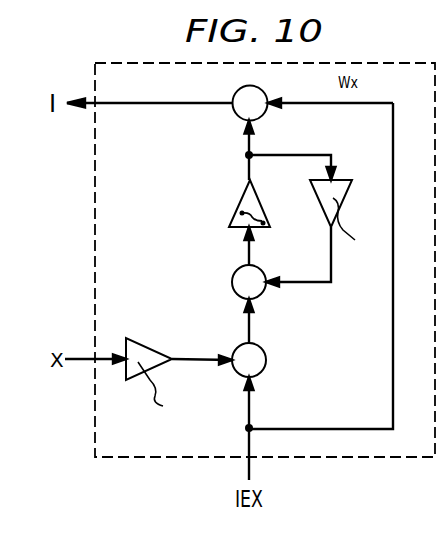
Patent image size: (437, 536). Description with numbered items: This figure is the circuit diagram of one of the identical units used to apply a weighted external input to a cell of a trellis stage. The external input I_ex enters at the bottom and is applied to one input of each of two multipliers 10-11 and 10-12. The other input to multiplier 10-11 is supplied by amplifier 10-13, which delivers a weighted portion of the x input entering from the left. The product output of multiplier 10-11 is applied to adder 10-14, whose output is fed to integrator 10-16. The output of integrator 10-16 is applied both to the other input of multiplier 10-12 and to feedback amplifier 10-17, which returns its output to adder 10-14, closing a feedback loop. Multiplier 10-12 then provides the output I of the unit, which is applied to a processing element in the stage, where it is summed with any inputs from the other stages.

The multiplier 10-11 is at (267, 352).
The multiplier 10-12 is at (239, 115).
The amplifier 10-13 is at (145, 346).
The adder 10-14 is at (237, 273).
The integrator 10-16 is at (238, 204).
The feedback amplifier 10-17 is at (345, 178).